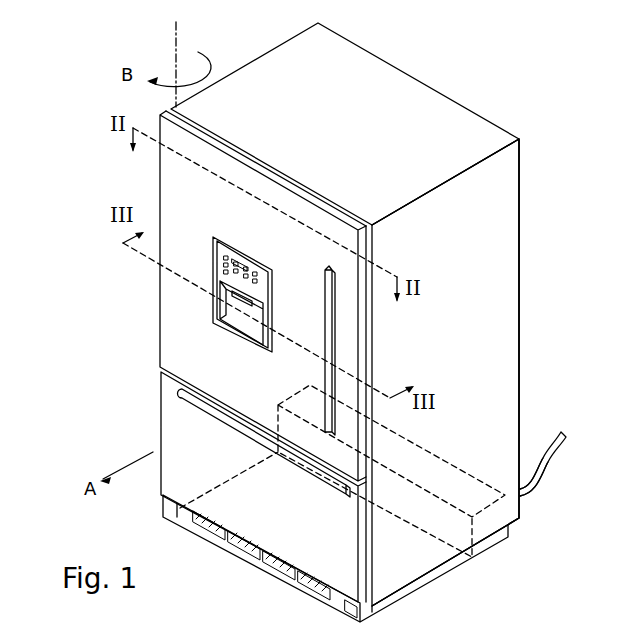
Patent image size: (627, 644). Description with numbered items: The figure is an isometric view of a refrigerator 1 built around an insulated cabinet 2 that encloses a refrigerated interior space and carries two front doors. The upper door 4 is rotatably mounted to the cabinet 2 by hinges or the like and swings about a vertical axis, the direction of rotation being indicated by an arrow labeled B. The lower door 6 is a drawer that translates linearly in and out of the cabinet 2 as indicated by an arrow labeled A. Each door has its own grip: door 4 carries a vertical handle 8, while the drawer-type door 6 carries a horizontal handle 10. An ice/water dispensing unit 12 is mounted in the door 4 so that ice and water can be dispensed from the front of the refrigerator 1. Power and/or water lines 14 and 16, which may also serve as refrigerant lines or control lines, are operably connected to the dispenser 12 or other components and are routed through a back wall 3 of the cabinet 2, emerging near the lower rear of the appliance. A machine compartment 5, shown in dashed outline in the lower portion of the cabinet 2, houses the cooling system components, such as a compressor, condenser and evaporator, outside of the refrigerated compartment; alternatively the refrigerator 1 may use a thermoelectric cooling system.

The refrigerator 1 is at (521, 184).
The insulated cabinet 2 is at (521, 362).
The back wall 3 is at (520, 295).
The door 4 is at (160, 317).
The machine compartment 5 is at (443, 540).
The door 6 is at (162, 412).
The handle 8 is at (323, 380).
The handle 10 is at (282, 457).
The ice/water dispensing unit 12 is at (211, 309).
The power and/or water line 14 is at (556, 432).
The power and/or water line 16 is at (535, 490).